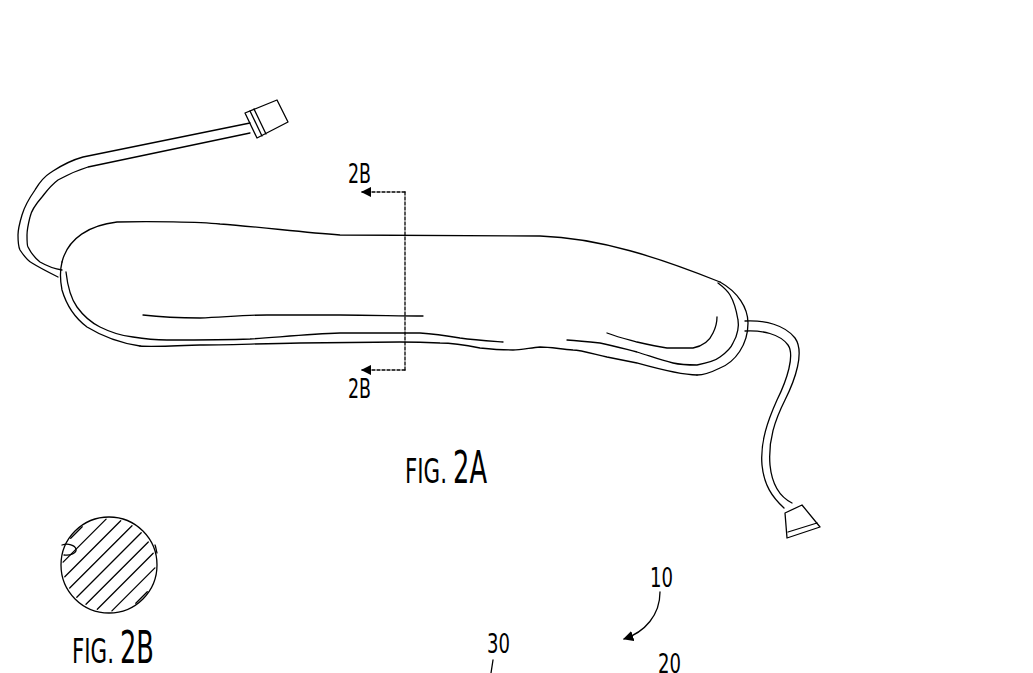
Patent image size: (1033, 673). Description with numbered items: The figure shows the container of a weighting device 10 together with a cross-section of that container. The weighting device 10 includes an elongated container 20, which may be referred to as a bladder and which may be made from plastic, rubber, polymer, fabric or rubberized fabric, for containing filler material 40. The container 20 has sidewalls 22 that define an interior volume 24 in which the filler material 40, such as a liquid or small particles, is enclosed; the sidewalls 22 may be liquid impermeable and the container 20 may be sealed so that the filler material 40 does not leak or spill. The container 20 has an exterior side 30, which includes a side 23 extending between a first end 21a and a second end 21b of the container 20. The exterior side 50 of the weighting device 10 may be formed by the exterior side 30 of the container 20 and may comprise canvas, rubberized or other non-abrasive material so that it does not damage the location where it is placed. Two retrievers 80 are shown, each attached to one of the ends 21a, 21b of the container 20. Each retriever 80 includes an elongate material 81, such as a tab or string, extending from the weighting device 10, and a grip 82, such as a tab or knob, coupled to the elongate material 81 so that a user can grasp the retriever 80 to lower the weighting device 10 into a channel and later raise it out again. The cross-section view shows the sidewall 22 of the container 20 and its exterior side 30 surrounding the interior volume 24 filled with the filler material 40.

In FIG. 2A, the weighting device 10 is at (646, 184).
In FIG. 2A, the container 20 is at (655, 257).
In FIG. 2B, the container 20 is at (97, 517).
In FIG. 2A, the end 21a is at (81, 332).
In FIG. 2A, the end 21b is at (703, 380).
In FIG. 2B, the sidewall 22 is at (72, 557).
In FIG. 2A, the side 23 is at (498, 310).
In FIG. 2B, the interior volume 24 is at (132, 548).
In FIG. 2A, the exterior side 30 is at (543, 247).
In FIG. 2B, the exterior side 30 is at (157, 555).
In FIG. 2B, the filler material 40 is at (127, 577).
In FIG. 2A, the exterior side 50 is at (600, 323).
In FIG. 2A, the retriever 80 is at (156, 165).
In FIG. 2A, the elongate material 81 is at (203, 135).
In FIG. 2A, the grip 82 is at (260, 103).